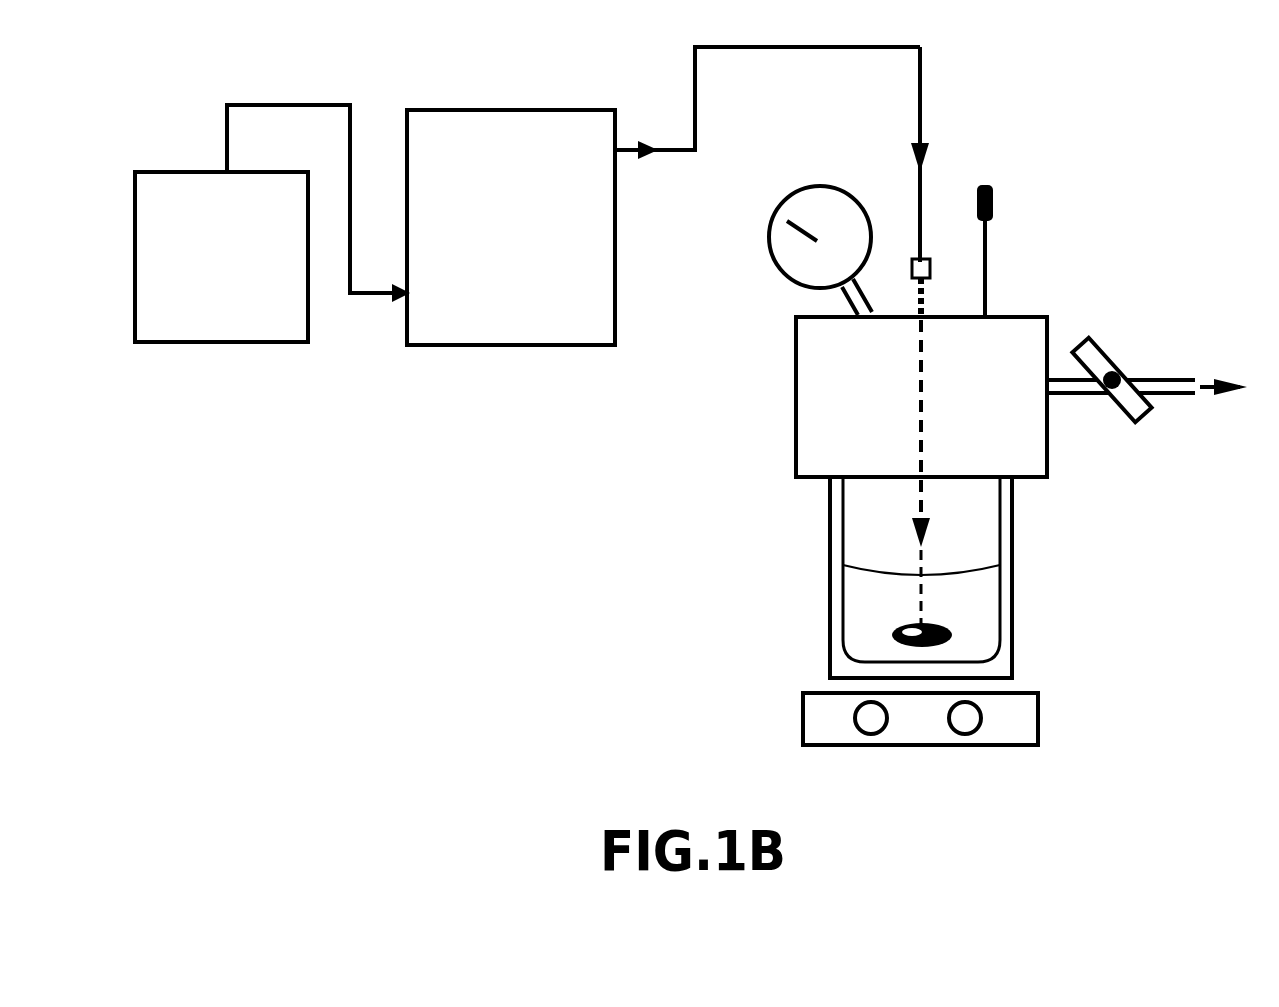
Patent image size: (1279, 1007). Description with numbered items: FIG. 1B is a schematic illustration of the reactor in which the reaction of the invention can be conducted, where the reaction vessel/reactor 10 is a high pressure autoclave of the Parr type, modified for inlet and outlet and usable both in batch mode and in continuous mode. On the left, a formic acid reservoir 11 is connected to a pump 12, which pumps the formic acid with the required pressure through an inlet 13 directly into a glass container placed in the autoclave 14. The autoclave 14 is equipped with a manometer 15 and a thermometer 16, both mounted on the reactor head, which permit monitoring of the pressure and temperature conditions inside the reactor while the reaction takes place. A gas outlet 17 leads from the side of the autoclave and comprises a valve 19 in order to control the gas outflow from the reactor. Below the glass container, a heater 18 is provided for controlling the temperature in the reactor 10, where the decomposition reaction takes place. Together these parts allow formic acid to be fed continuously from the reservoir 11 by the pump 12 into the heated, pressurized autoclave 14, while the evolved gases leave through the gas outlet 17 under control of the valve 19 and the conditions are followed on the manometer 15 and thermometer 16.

The reaction vessel/reactor 10 is at (805, 563).
The formic acid reservoir 11 is at (232, 272).
The pump 12 is at (524, 255).
The inlet 13 is at (926, 258).
The autoclave 14 is at (1013, 530).
The manometer 15 is at (800, 248).
The thermometer 16 is at (988, 237).
The gas outlet 17 is at (1150, 375).
The heater 18 is at (1038, 717).
The valve 19 is at (1072, 334).